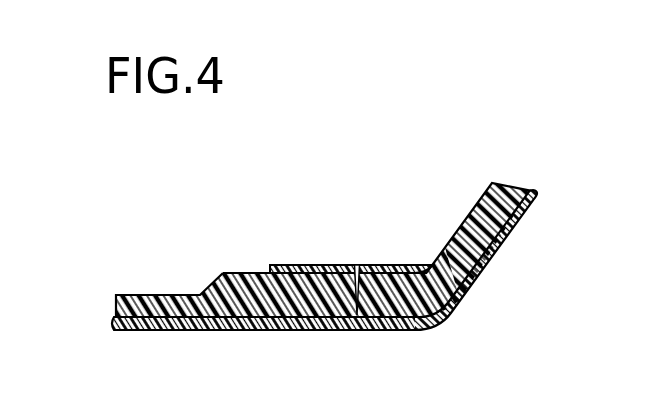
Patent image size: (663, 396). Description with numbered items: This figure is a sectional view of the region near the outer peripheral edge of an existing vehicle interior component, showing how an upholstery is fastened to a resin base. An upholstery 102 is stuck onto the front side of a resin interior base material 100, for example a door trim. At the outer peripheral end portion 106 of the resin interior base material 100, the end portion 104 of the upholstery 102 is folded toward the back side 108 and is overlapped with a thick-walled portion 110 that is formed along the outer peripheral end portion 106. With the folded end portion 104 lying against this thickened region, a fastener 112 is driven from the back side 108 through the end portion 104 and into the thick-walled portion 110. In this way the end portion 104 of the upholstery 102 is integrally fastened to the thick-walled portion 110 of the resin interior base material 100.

The resin interior base material 100 is at (108, 282).
The upholstery 102 is at (256, 322).
The end portion 104 is at (392, 268).
The outer peripheral end portion 106 is at (512, 230).
The back side 108 is at (162, 291).
The thick-walled portion 110 is at (317, 284).
The fastener 112 is at (379, 318).